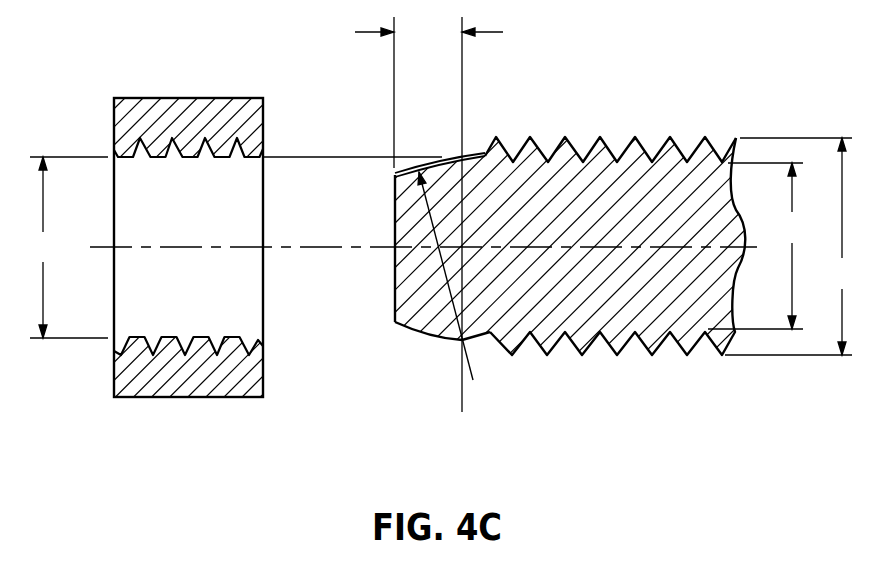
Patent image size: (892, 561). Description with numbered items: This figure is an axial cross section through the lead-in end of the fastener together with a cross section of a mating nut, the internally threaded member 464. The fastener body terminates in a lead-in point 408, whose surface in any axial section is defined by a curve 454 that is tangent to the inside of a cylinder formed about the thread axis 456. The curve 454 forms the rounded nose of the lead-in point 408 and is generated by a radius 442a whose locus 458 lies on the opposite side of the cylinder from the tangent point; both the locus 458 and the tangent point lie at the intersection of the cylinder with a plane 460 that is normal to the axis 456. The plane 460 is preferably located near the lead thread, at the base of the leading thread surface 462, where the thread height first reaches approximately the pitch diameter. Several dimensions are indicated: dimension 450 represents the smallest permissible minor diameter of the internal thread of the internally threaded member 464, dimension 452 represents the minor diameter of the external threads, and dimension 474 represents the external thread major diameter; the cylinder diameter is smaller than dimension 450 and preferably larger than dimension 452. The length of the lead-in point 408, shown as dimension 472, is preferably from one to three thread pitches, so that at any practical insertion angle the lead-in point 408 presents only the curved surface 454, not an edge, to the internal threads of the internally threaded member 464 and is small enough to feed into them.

The internally threaded member 464 is at (180, 97).
The dimension of smallest permissible minor diameter of the mating internal thread 450 is at (63, 247).
The thread axis 456 is at (316, 246).
The dimension of lead-in point length 472 is at (383, 214).
The radius 442a is at (442, 288).
The curve 454 is at (408, 166).
The leading thread surface 462 is at (507, 140).
The lead-in point 408 is at (446, 335).
The locus 458 is at (460, 342).
The plane 460 is at (465, 392).
The dimension of minor diameter of the external threads 452 is at (762, 246).
The dimension of external thread major diameter 474 is at (795, 246).